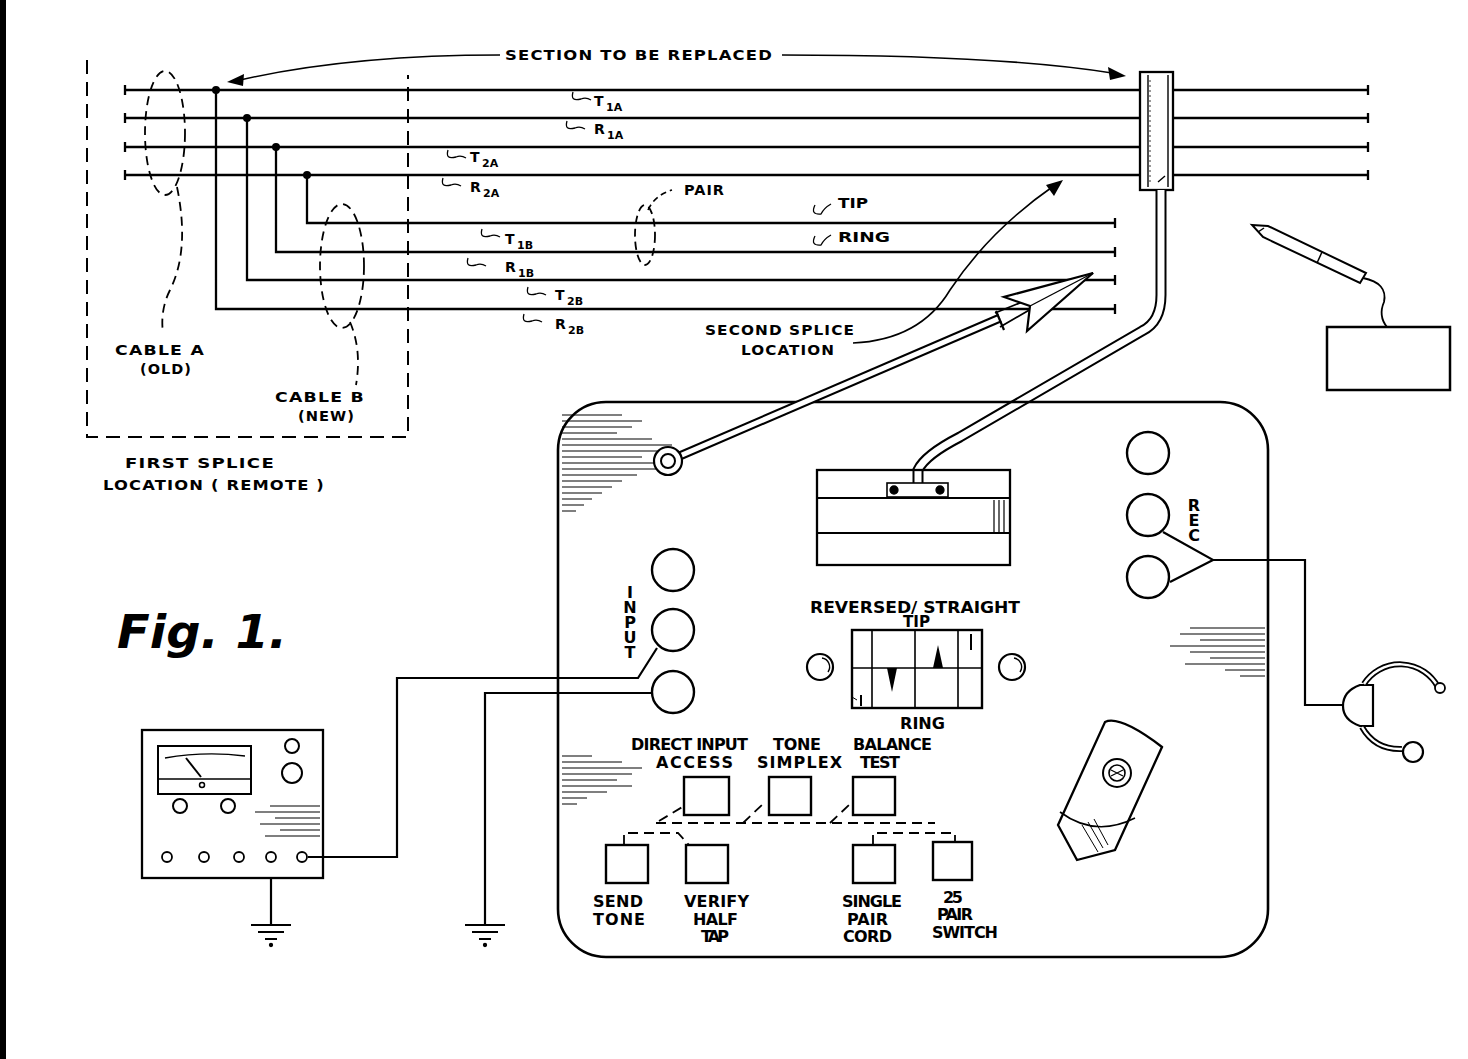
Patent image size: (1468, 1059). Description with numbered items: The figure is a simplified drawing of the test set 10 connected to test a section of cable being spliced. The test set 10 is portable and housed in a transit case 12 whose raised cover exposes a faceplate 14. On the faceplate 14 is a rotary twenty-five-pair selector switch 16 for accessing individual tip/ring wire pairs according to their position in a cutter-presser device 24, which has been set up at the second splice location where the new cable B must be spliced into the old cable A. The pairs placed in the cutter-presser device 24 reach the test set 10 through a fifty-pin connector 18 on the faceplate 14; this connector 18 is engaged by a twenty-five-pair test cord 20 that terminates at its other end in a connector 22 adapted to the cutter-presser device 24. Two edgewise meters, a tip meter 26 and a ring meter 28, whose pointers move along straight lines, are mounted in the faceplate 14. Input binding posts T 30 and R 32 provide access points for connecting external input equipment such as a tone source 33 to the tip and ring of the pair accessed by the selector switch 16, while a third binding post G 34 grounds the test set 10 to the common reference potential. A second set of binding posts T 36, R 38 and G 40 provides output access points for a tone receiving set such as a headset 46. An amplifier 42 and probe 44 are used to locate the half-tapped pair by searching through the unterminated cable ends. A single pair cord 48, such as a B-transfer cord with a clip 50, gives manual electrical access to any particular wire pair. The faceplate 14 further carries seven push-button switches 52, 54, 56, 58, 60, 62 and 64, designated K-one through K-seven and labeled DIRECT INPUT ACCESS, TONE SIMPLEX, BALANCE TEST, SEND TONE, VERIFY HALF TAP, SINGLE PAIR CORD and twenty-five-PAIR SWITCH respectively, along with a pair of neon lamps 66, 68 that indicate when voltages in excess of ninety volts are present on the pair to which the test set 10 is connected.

The test set 10 is at (537, 608).
The transit case 12 is at (1268, 783).
The faceplate 14 is at (1240, 890).
The rotary 25-pair selector switch 16 is at (1138, 775).
The 50-pin connector 18 is at (820, 513).
The 25-pair test cord 20 is at (1108, 365).
The connector 22 is at (1163, 178).
The cutter-presser device 24 is at (1173, 78).
The tip meter 26 is at (985, 634).
The ring meter 28 is at (852, 697).
The input binding post T 30 is at (658, 565).
The input binding post R 32 is at (688, 622).
The tone source 33 is at (215, 868).
The binding post G 34 is at (665, 700).
The output binding post T 36 is at (1150, 436).
The output binding post R 38 is at (1138, 522).
The output binding post G 40 is at (1152, 594).
The amplifier 42 is at (1340, 350).
The probe 44 is at (1313, 265).
The headset 46 is at (1365, 700).
The single pair cord 48 is at (732, 425).
The clip 50 is at (1040, 325).
The push-button switch K1 52 is at (684, 790).
The push-button switch K2 54 is at (790, 815).
The push-button switch K3 56 is at (895, 790).
The push-button switch K4 58 is at (606, 865).
The push-button switch K5 60 is at (728, 872).
The push-button switch K6 62 is at (853, 870).
The push-button switch K7 64 is at (972, 865).
The neon lamp 66 is at (810, 668).
The neon lamp 68 is at (1012, 677).